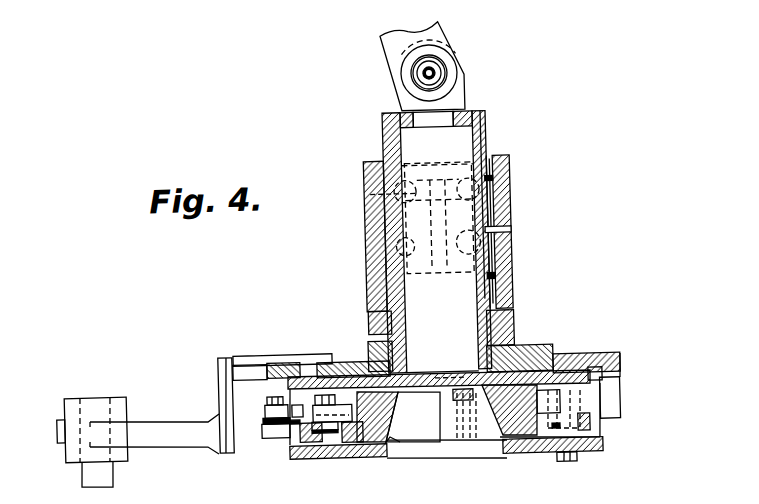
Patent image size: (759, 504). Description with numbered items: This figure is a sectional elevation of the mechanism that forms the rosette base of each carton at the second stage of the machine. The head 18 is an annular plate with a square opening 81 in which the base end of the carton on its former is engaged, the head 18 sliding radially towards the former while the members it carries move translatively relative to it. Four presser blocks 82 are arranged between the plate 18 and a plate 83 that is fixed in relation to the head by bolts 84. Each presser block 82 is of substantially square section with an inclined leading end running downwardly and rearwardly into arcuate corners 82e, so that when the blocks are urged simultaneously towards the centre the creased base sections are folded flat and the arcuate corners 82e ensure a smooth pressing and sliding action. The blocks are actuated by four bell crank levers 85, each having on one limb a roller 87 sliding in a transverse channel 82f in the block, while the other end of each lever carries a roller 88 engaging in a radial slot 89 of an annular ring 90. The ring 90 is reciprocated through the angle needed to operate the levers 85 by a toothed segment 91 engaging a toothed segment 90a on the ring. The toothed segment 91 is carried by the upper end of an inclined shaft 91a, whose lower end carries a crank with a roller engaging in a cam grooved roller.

The head 18 is at (524, 326).
The square opening 81 is at (461, 450).
The presser block 82 is at (433, 389).
The arcuate corner 82e is at (387, 441).
The transverse channel 82f is at (536, 455).
The plate 83 is at (575, 379).
The bolt 84 is at (559, 464).
The bell crank lever 85 is at (292, 412).
The roller 87 is at (325, 430).
The roller 88 is at (275, 432).
The radial slot 89 is at (604, 405).
The annular ring 90 is at (613, 366).
The toothed segment 90a is at (233, 373).
The toothed segment 91 is at (214, 394).
The inclined shaft 91a is at (96, 461).